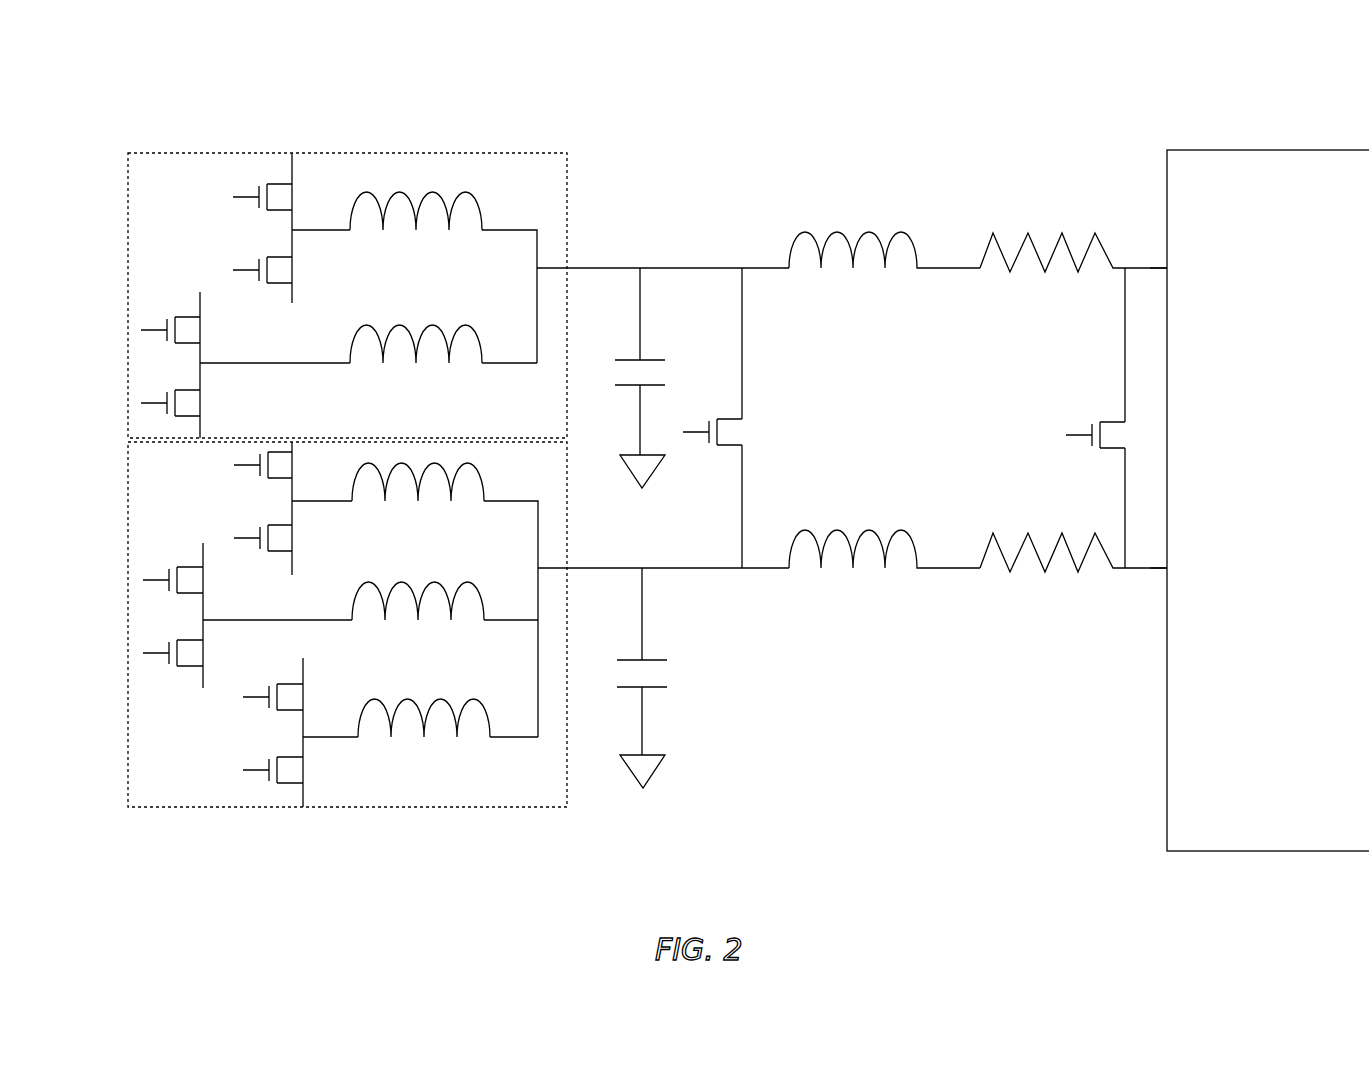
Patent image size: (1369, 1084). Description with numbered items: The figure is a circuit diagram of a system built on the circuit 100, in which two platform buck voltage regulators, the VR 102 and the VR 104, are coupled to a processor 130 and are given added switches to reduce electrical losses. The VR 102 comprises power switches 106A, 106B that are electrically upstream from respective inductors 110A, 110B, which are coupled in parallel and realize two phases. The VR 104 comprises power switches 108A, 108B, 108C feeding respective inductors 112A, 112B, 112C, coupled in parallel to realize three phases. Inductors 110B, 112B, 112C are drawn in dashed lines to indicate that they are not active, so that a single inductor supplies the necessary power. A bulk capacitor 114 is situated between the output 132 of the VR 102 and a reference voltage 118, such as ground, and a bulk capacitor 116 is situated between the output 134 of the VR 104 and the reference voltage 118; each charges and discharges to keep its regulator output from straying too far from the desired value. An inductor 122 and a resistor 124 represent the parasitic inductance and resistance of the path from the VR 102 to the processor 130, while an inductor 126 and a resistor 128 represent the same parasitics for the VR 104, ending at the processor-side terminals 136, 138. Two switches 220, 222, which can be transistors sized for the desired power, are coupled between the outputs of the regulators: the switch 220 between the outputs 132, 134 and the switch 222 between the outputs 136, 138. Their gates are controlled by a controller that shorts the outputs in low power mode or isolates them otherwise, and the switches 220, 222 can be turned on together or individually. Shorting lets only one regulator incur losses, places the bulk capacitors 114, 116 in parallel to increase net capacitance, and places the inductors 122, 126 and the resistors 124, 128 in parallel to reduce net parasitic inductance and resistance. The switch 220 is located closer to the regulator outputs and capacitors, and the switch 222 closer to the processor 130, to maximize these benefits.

The circuit 100 is at (146, 92).
The voltage regulator 102 is at (126, 185).
The voltage regulator 104 is at (126, 489).
The power switch 106A is at (236, 213).
The power switch 106B is at (140, 358).
The power switch 108A is at (243, 491).
The power switch 108B is at (143, 615).
The power switch 108C is at (248, 732).
The inductor 110A is at (431, 192).
The inductor 110B is at (431, 327).
The inductor 112A is at (450, 476).
The inductor 112B is at (441, 582).
The inductor 112C is at (443, 702).
The bulk capacitor 114 is at (645, 357).
The bulk capacitor 116 is at (665, 658).
The reference voltage 118 is at (652, 482).
The inductor 122 is at (836, 230).
The resistor 124 is at (1026, 237).
The inductor 126 is at (868, 530).
The resistor 128 is at (1026, 537).
The processor 130 is at (1263, 146).
The output 132 is at (663, 265).
The output 134 is at (666, 565).
The output 136 is at (1150, 262).
The output 138 is at (1158, 573).
The switch 220 is at (736, 422).
The switch 222 is at (1116, 422).